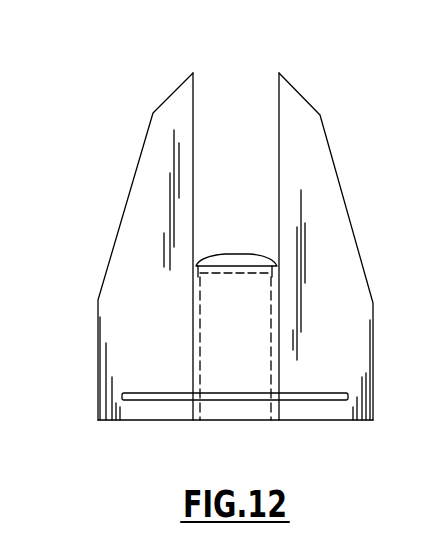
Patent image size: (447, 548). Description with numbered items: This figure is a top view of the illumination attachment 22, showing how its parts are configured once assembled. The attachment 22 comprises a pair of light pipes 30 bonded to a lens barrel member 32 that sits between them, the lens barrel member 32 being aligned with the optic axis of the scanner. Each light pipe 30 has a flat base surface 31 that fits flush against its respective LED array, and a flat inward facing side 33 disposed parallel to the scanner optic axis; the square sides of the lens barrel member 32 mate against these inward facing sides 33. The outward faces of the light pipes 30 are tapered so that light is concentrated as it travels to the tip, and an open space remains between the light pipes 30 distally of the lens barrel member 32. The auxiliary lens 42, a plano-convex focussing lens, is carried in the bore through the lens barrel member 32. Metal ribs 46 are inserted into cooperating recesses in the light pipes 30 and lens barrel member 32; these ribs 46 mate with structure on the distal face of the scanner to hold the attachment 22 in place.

The illumination attachment 22 is at (328, 51).
The light pipe 30 is at (110, 352).
The flat base surface 31 is at (333, 423).
The lens barrel member 32 is at (215, 325).
The flat inward facing side 33 is at (193, 108).
The auxiliary lens 42 is at (217, 254).
The metal rib 46 is at (145, 401).